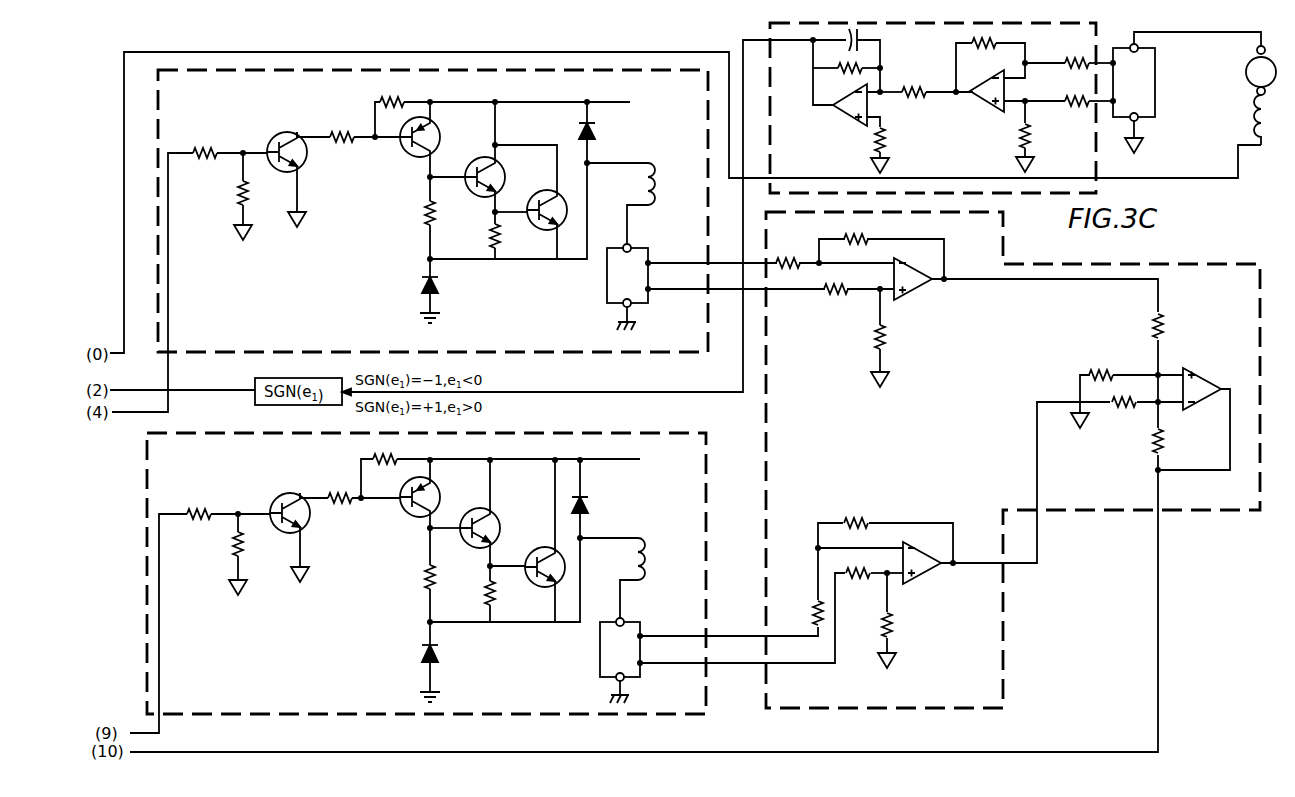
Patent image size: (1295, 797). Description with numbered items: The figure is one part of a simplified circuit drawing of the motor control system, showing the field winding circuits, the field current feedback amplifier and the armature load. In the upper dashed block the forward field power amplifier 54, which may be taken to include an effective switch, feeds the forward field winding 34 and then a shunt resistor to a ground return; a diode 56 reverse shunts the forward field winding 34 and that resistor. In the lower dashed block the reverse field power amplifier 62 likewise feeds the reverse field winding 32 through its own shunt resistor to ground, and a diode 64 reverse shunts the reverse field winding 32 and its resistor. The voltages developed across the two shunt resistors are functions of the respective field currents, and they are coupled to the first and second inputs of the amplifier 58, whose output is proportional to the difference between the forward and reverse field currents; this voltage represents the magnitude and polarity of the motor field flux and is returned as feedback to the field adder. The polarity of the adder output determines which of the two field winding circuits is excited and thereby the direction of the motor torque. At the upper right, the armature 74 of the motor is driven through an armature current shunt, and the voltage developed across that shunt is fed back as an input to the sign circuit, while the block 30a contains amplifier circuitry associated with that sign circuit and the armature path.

The summing and compensation amplifier network 30a is at (1096, 193).
The reverse field winding 32 is at (640, 580).
The forward field winding 34 is at (648, 163).
The forward field power amplifier 54 is at (620, 353).
The diode 56 is at (438, 288).
The amplifier 58 is at (1003, 622).
The reverse field power amplifier 62 is at (612, 433).
The diode 64 is at (438, 653).
The armature 74 is at (1254, 123).